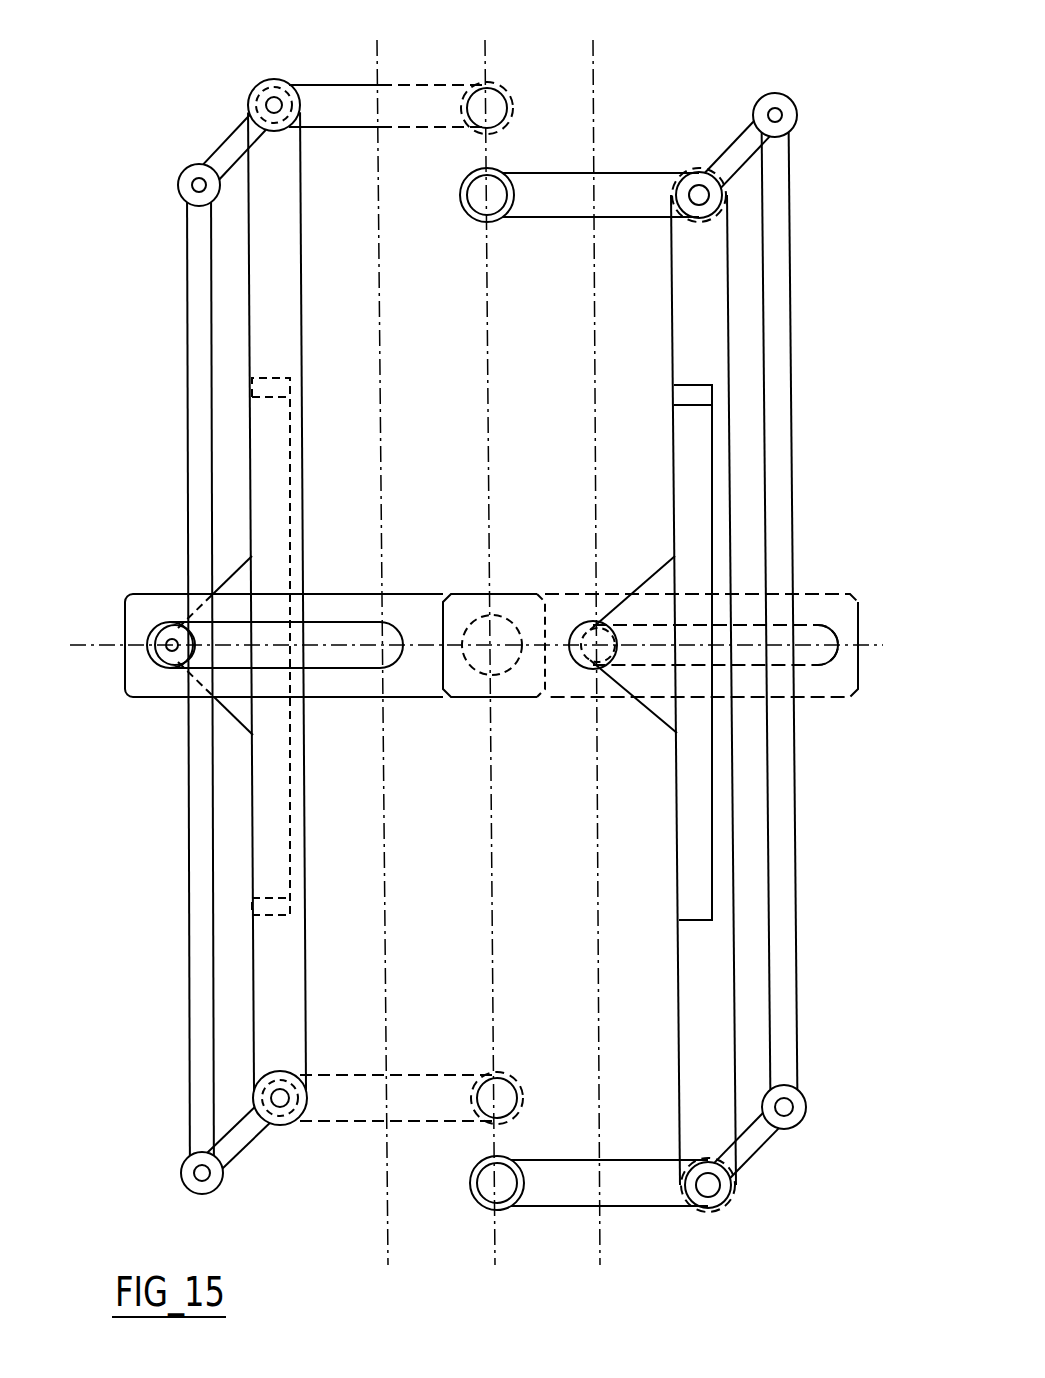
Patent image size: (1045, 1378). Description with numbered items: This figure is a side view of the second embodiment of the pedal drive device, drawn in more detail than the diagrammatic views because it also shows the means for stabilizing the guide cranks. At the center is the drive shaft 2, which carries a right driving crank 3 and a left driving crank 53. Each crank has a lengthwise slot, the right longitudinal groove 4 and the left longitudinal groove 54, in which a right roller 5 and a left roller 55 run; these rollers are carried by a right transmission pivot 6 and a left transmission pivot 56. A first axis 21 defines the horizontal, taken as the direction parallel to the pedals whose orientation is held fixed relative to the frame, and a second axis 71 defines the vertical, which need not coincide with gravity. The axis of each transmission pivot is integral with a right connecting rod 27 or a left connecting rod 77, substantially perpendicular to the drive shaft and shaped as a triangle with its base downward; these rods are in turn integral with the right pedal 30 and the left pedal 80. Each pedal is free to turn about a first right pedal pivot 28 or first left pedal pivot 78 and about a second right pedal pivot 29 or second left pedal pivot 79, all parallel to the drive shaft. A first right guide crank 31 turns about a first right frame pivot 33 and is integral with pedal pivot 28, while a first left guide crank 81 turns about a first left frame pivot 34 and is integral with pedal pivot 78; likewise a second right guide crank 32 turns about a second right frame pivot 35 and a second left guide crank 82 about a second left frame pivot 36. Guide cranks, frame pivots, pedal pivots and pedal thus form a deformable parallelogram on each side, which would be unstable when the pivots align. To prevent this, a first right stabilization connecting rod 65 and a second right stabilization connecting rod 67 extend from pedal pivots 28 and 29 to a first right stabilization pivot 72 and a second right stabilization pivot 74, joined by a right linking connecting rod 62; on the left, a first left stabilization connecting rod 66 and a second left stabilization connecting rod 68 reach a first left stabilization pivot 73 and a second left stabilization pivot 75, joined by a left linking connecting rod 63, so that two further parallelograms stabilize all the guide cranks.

The drive shaft 2 is at (500, 650).
The right driving crank 3 is at (838, 605).
The right longitudinal groove 4 is at (812, 640).
The right roller 5 is at (590, 665).
The right transmission pivot 6 is at (594, 636).
The first axis 21 is at (492, 56).
The right connecting rod 27 is at (656, 712).
The first right pedal pivot 28 is at (696, 192).
The second right pedal pivot 29 is at (709, 1190).
The right pedal 30 is at (700, 495).
The first right guide crank 31 is at (565, 193).
The second right guide crank 32 is at (636, 1190).
The first right frame pivot 33 is at (483, 200).
The first left frame pivot 34 is at (472, 118).
The second right frame pivot 35 is at (484, 1196).
The second left frame pivot 36 is at (488, 1085).
The left driving crank 53 is at (140, 692).
The left longitudinal groove 54 is at (340, 633).
The left roller 55 is at (172, 662).
The left transmission pivot 56 is at (168, 638).
The right linking connecting rod 62 is at (780, 368).
The left linking connecting rod 63 is at (205, 395).
The first right stabilization connecting rod 65 is at (729, 148).
The first left stabilization connecting rod 66 is at (226, 138).
The second right stabilization connecting rod 67 is at (756, 1142).
The second left stabilization connecting rod 68 is at (238, 1145).
The second axis 71 is at (105, 652).
The first right stabilization pivot 72 is at (778, 112).
The first left stabilization pivot 73 is at (197, 190).
The second right stabilization pivot 74 is at (786, 1110).
The second left stabilization pivot 75 is at (200, 1178).
The left connecting rod 77 is at (233, 655).
The first left pedal pivot 78 is at (270, 100).
The second left pedal pivot 79 is at (281, 1102).
The left pedal 80 is at (275, 875).
The first left guide crank 81 is at (333, 108).
The second left guide crank 82 is at (360, 1113).